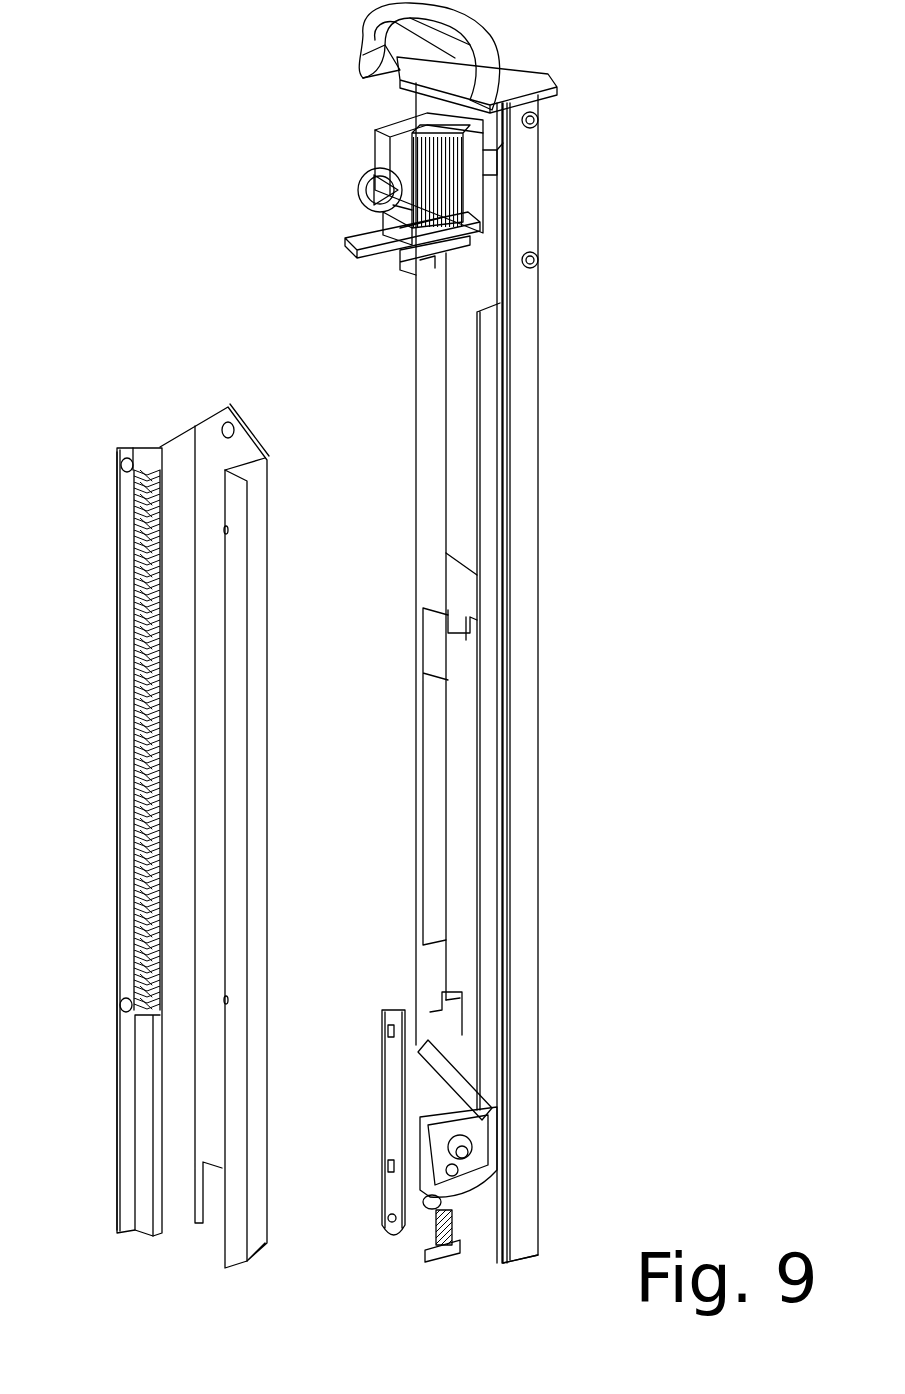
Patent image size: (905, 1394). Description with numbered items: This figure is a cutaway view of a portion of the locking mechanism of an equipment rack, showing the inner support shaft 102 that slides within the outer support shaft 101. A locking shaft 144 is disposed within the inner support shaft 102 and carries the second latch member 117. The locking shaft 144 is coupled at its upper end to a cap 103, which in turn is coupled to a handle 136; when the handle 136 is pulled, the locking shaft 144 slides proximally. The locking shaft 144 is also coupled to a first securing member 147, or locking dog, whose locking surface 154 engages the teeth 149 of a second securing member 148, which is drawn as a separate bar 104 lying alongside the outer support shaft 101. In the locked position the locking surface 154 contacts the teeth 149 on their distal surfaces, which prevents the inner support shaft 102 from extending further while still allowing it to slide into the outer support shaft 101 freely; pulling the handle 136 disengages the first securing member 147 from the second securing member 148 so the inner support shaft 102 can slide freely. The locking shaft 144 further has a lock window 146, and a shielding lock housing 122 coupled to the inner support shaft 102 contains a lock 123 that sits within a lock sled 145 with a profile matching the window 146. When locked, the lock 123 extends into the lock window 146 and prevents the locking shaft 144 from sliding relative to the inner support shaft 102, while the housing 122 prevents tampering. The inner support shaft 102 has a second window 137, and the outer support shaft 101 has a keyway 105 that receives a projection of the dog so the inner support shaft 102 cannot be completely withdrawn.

The outer support shaft 101 is at (266, 643).
The inner support shaft 102 is at (533, 477).
The cap 103 is at (533, 78).
The serrated bar 104 is at (137, 447).
The keyway 105 is at (248, 530).
The second latch member 117 is at (475, 588).
The shielding lock housing 122 is at (407, 263).
The lock 123 is at (380, 150).
The handle 136 is at (365, 43).
The second window 137 is at (423, 683).
The locking shaft 144 is at (492, 292).
The lock sled 145 is at (345, 240).
The lock window 146 is at (492, 173).
The first securing member 147 is at (500, 1175).
The second securing member 148 is at (122, 832).
The teeth 149 is at (133, 632).
The locking surface 154 is at (424, 1048).